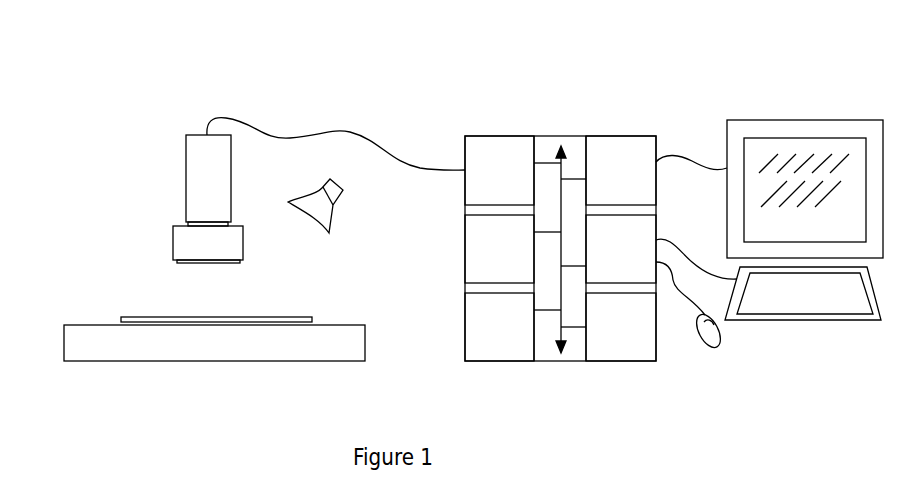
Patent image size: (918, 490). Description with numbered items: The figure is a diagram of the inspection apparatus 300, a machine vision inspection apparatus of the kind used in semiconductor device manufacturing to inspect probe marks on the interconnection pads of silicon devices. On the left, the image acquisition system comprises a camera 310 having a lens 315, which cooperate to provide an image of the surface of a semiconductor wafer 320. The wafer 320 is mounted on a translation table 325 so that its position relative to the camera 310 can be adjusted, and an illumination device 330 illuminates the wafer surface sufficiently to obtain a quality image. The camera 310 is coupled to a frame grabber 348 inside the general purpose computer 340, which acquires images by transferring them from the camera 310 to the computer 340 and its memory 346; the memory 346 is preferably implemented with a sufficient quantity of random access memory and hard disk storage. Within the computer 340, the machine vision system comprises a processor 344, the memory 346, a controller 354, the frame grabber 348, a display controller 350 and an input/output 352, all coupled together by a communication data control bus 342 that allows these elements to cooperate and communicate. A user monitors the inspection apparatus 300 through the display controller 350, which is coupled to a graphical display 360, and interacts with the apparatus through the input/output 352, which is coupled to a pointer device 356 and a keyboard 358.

The inspection apparatus 300 is at (248, 67).
The camera 310 is at (186, 170).
The lens 315 is at (173, 232).
The semiconductor wafer 320 is at (137, 316).
The translation table 325 is at (90, 325).
The illumination device 330 is at (333, 208).
The general purpose computer 340 is at (550, 260).
The communication data control bus 342 is at (553, 334).
The processor 344 is at (477, 312).
The memory 346 is at (478, 228).
The frame grabber 348 is at (478, 148).
The display controller 350 is at (603, 144).
The input/output (I/O) 352 is at (643, 227).
The controller 354 is at (645, 343).
The pointer device 356 is at (720, 340).
The keyboard 358 is at (828, 320).
The graphical display 360 is at (793, 120).